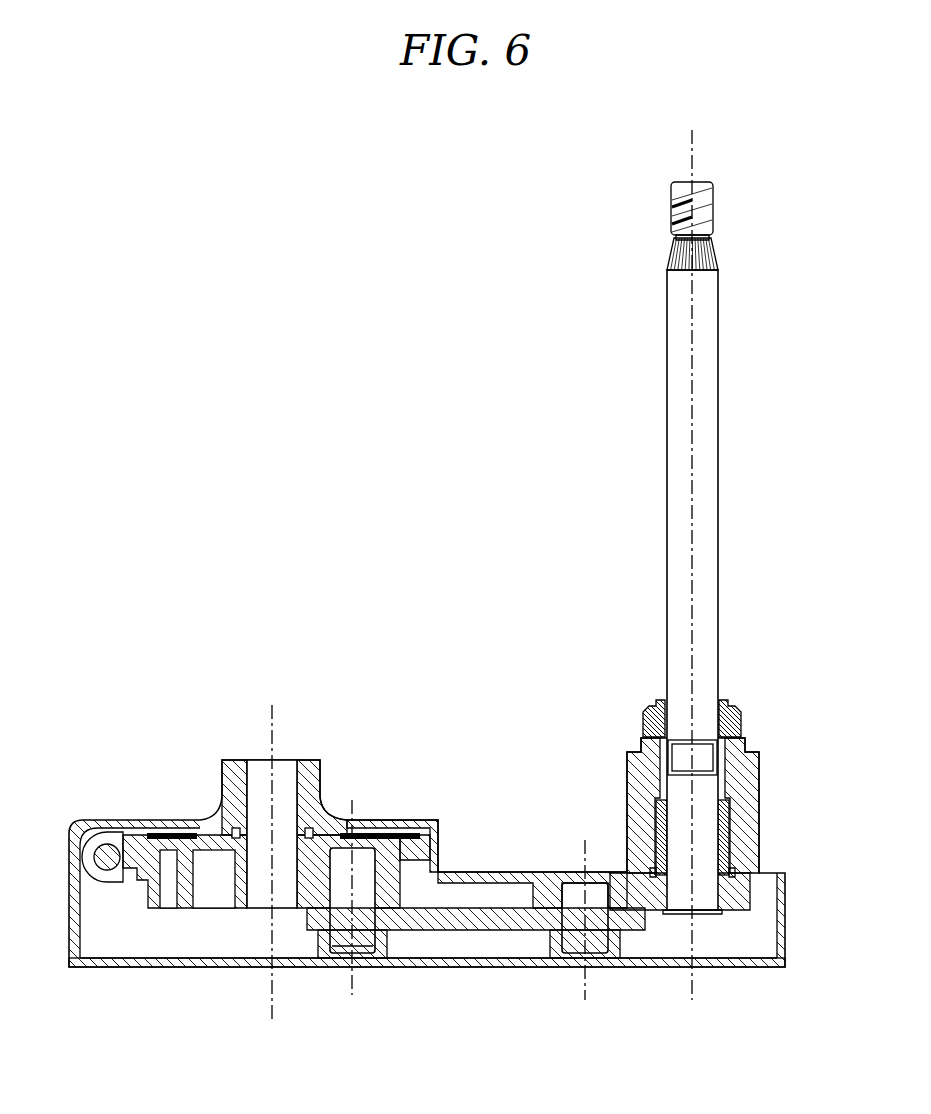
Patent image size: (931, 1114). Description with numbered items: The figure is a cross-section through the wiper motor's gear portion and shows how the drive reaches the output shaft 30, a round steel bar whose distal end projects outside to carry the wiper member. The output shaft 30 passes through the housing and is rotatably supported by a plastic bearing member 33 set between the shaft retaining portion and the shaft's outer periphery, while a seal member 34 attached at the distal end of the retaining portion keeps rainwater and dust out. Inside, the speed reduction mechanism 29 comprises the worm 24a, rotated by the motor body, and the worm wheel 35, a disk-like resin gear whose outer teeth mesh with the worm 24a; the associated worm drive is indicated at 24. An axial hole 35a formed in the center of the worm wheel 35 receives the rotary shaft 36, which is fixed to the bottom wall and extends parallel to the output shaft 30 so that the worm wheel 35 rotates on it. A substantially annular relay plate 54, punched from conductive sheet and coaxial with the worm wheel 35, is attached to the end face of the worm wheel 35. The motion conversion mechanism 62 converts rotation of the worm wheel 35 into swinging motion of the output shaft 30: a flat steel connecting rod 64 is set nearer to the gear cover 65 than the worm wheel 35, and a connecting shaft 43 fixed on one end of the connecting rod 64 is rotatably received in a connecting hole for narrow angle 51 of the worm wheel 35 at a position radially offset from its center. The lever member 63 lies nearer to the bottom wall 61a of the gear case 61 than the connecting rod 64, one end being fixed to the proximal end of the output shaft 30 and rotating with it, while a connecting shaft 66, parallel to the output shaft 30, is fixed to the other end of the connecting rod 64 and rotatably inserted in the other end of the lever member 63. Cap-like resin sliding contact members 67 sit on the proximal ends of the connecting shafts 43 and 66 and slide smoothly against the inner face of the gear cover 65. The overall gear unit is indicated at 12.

The gear unit assembly 12 is at (392, 637).
The hinge pin 24 is at (108, 852).
The worm 24a is at (84, 836).
The speed reduction mechanism 29 is at (117, 895).
The output shaft 30 is at (711, 413).
The bearing member 33 is at (723, 833).
The seal member 34 is at (740, 712).
The worm wheel 35 is at (200, 828).
The axial hole 35a is at (258, 840).
The rotary shaft 36 is at (285, 775).
The connecting shaft 43 is at (363, 940).
The connecting hole for narrow angle 51 is at (338, 900).
The relay plate 54 is at (158, 835).
The gear case 61 is at (402, 816).
The bottom wall 61a is at (363, 827).
The motion conversion mechanism 62 is at (508, 944).
The lever member 63 is at (730, 900).
The connecting rod 64 is at (463, 925).
The gear cover 65 is at (425, 962).
The connecting shaft 66 is at (572, 933).
The sliding contact member 67 is at (385, 950).